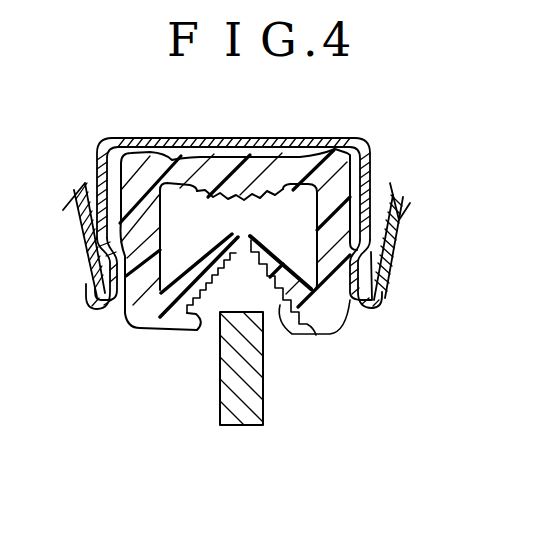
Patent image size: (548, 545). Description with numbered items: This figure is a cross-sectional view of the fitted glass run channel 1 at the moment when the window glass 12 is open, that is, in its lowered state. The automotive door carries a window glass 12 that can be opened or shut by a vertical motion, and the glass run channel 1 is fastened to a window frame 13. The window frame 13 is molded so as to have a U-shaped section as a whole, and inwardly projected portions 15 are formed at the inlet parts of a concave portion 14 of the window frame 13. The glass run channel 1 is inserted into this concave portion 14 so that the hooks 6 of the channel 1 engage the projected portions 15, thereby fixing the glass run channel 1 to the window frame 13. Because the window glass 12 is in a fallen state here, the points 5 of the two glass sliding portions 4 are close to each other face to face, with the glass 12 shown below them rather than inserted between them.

The glass run channel 1 is at (352, 138).
The glass sliding portions 4 is at (200, 318).
The points 5 is at (232, 234).
The hooks 6 is at (404, 214).
The window glass 12 is at (220, 383).
The window frame 13 is at (395, 263).
The concave portion 14 is at (373, 183).
The inwardly projected portions 15 is at (358, 303).